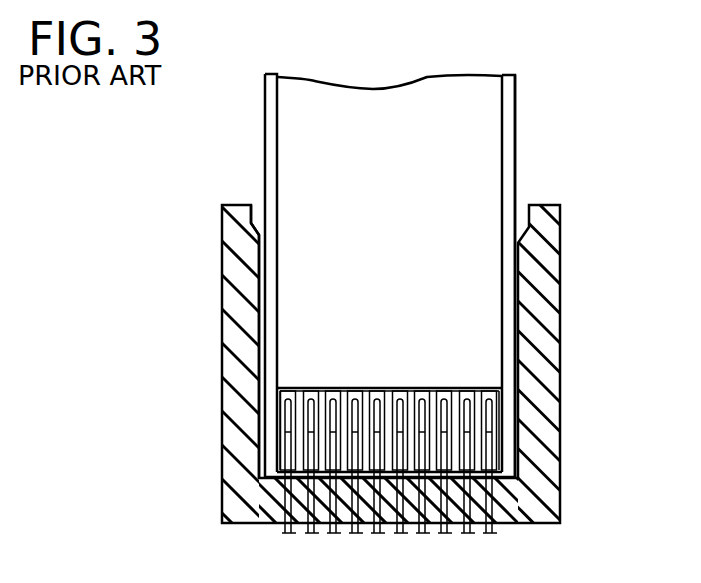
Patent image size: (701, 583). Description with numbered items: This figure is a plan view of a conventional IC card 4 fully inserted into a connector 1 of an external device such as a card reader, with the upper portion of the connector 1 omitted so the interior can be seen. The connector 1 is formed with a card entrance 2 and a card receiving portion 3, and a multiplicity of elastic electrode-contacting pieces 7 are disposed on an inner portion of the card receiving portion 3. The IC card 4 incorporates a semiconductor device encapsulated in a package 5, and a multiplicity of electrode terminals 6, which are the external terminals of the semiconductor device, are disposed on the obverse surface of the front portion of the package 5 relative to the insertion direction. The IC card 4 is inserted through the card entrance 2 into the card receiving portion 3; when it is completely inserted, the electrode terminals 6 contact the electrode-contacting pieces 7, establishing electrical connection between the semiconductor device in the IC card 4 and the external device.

The connector 1 is at (566, 334).
The card entrance 2 is at (258, 207).
The card receiving portion 3 is at (268, 316).
The IC card 4 is at (529, 102).
The package 5 is at (515, 141).
The electrode terminals 6 is at (283, 433).
The elastic electrode-contacting pieces 7 is at (287, 531).